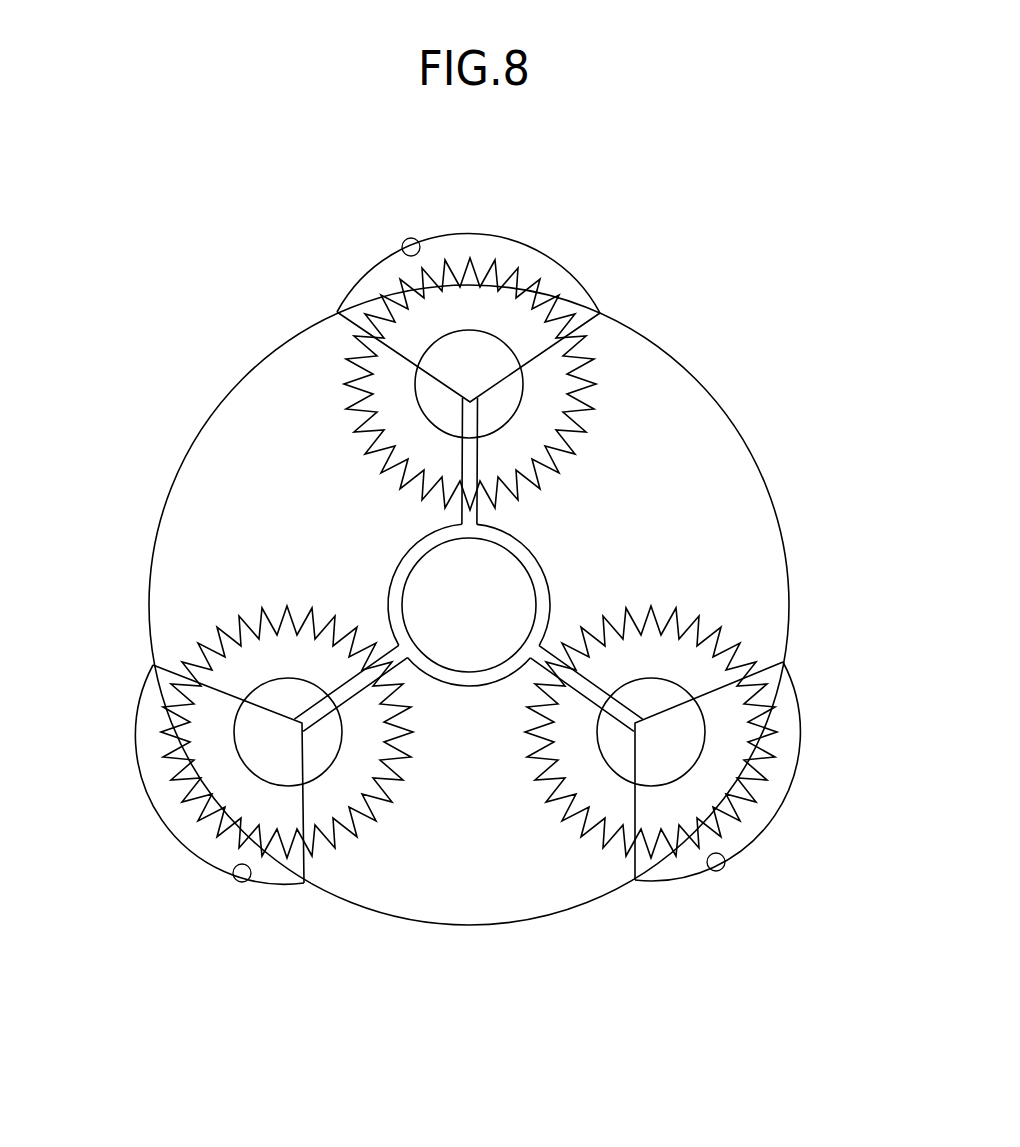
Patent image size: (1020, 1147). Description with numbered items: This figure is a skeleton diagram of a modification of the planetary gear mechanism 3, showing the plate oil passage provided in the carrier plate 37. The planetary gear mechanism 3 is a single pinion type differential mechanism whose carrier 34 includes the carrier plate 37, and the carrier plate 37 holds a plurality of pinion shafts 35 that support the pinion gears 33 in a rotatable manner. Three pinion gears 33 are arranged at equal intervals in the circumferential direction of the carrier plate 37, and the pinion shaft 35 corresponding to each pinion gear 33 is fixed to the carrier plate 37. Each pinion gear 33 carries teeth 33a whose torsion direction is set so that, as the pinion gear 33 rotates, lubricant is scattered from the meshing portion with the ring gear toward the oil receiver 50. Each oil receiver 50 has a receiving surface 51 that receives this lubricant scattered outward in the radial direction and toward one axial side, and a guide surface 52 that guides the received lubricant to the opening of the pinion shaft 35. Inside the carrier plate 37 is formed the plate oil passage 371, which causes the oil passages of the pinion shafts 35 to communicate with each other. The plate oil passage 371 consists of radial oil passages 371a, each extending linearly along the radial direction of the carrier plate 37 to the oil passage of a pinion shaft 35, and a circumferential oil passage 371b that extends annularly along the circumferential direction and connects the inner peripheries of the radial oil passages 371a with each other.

The planetary gear mechanism 3 is at (678, 207).
The pinion gear 33 is at (348, 433).
The teeth 33a is at (342, 393).
The carrier 34 is at (793, 558).
The pinion shaft 35 is at (518, 410).
The carrier plate 37 is at (740, 513).
The plate oil passage 371 is at (826, 345).
The radial oil passage 371a is at (473, 476).
The circumferential oil passage 371b is at (527, 560).
The oil receiver 50 is at (514, 234).
The receiving surface 51 is at (407, 240).
The guide surface 52 is at (550, 280).